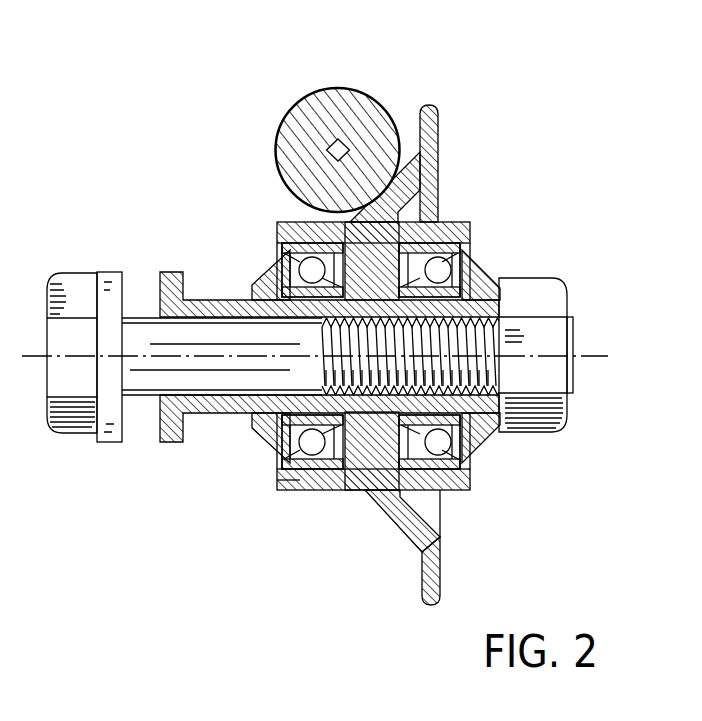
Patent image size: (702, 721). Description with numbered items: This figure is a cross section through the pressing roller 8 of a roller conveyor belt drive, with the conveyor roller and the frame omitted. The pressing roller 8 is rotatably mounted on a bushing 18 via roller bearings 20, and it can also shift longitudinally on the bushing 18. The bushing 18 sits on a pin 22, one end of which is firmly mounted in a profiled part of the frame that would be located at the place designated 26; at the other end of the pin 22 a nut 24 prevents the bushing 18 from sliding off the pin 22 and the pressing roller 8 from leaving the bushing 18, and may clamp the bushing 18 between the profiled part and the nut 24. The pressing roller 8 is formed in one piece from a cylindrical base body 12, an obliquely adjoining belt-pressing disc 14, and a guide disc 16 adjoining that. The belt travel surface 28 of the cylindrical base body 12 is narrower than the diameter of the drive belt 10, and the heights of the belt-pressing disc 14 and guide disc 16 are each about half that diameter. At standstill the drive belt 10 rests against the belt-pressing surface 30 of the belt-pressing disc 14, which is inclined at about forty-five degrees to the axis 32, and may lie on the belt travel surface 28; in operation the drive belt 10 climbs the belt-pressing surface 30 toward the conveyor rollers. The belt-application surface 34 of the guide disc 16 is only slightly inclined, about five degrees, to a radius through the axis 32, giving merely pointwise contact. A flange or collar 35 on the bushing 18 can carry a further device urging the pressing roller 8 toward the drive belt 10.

The pressing roller 8 is at (462, 514).
The drive belt 10 is at (337, 100).
The cylindrical base body 12 is at (282, 480).
The belt-pressing disc 14 is at (403, 528).
The guide disc 16 is at (428, 142).
The bushing 18 is at (217, 302).
The roller bearings 20 is at (283, 247).
The pin 22 is at (155, 383).
The nut 24 is at (548, 290).
The place of the profiled part 26 is at (138, 293).
The belt travel surface 28 is at (300, 495).
The belt-pressing surface 30 is at (377, 503).
The axis 32 is at (590, 353).
The belt-application surface 34 is at (418, 588).
The flange or collar 35 is at (170, 273).